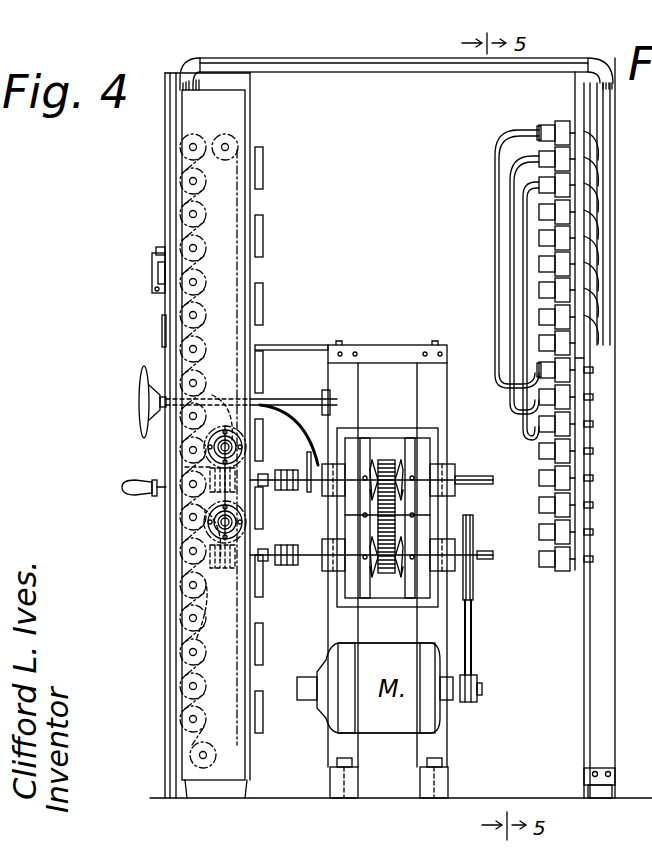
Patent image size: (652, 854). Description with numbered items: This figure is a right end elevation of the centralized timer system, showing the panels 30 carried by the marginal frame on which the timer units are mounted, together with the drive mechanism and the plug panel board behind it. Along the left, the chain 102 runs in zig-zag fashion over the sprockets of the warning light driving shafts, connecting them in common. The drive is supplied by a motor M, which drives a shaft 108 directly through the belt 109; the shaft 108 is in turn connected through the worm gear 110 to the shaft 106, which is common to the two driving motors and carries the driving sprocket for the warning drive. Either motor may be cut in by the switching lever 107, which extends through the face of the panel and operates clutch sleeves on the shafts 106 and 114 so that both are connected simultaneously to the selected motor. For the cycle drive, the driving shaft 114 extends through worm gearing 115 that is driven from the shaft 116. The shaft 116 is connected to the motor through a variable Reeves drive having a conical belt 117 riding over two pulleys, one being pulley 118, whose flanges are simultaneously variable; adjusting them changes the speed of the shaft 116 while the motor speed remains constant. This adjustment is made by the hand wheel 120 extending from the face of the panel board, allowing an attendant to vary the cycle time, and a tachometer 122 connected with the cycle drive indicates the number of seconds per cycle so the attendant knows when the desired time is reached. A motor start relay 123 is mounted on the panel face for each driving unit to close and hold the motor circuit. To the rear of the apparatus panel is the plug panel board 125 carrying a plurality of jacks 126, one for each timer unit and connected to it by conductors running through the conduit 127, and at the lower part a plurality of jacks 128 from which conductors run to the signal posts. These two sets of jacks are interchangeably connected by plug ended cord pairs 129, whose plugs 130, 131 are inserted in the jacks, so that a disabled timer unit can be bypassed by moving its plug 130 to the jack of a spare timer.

The panel 30 is at (165, 147).
The chain 102 is at (238, 204).
The shaft 106 is at (241, 524).
The switching lever 107 is at (128, 496).
The shaft 108 is at (292, 562).
The belt 109 is at (473, 616).
The worm gear 110 is at (219, 447).
The driving shaft 114 is at (241, 445).
The worm gearing 115 is at (185, 467).
The shaft 116 is at (287, 489).
The conical belt 117 is at (385, 460).
The pulley 118 is at (399, 456).
The hand wheel 120 is at (141, 389).
The tachometer 122 is at (162, 327).
The motor start relay 123 is at (152, 260).
The plug panel board 125 is at (584, 600).
The jack 126 is at (571, 124).
The conduit 127 is at (410, 73).
The jack 128 is at (573, 571).
The plug ended cord pair 129 is at (510, 131).
The plug 130 is at (540, 129).
The plug 131 is at (551, 378).